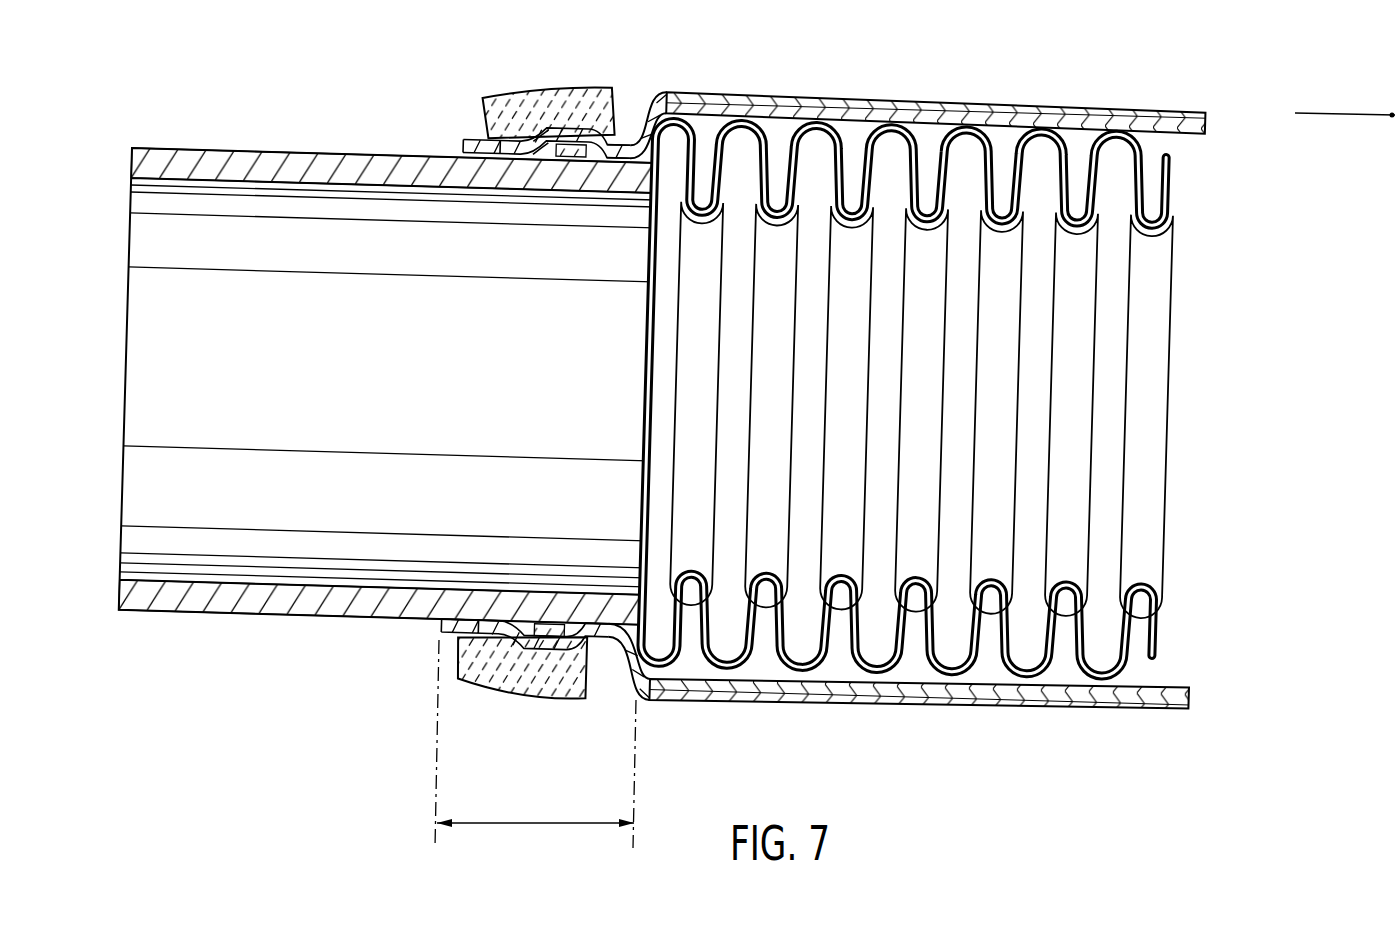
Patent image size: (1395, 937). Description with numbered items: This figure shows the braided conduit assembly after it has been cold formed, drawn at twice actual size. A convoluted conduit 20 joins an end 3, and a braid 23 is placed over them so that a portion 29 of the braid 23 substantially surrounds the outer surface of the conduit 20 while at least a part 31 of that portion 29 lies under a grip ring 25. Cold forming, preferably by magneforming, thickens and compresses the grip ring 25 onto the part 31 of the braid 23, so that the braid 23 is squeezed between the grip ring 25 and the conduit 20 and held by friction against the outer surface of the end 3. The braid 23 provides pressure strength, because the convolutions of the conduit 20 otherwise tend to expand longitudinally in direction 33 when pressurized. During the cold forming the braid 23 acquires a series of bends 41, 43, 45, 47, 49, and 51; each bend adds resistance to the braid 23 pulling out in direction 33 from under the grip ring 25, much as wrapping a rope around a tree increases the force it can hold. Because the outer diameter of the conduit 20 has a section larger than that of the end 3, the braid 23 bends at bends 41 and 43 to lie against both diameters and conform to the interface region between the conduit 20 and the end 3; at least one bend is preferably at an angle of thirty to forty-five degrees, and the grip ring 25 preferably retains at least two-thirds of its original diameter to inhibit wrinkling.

The end 3 is at (301, 580).
The conduit 20 is at (1222, 446).
The braid 23 is at (930, 710).
The grip ring 25 is at (578, 708).
The portion of the braid 29 is at (535, 824).
The part of the portion of the braid 31 is at (497, 632).
The direction 33 is at (1329, 113).
The bend 41 is at (647, 88).
The bend 43 is at (636, 165).
The bend 45 is at (597, 231).
The bend 47 is at (553, 150).
The bend 49 is at (527, 148).
The bend 51 is at (507, 142).